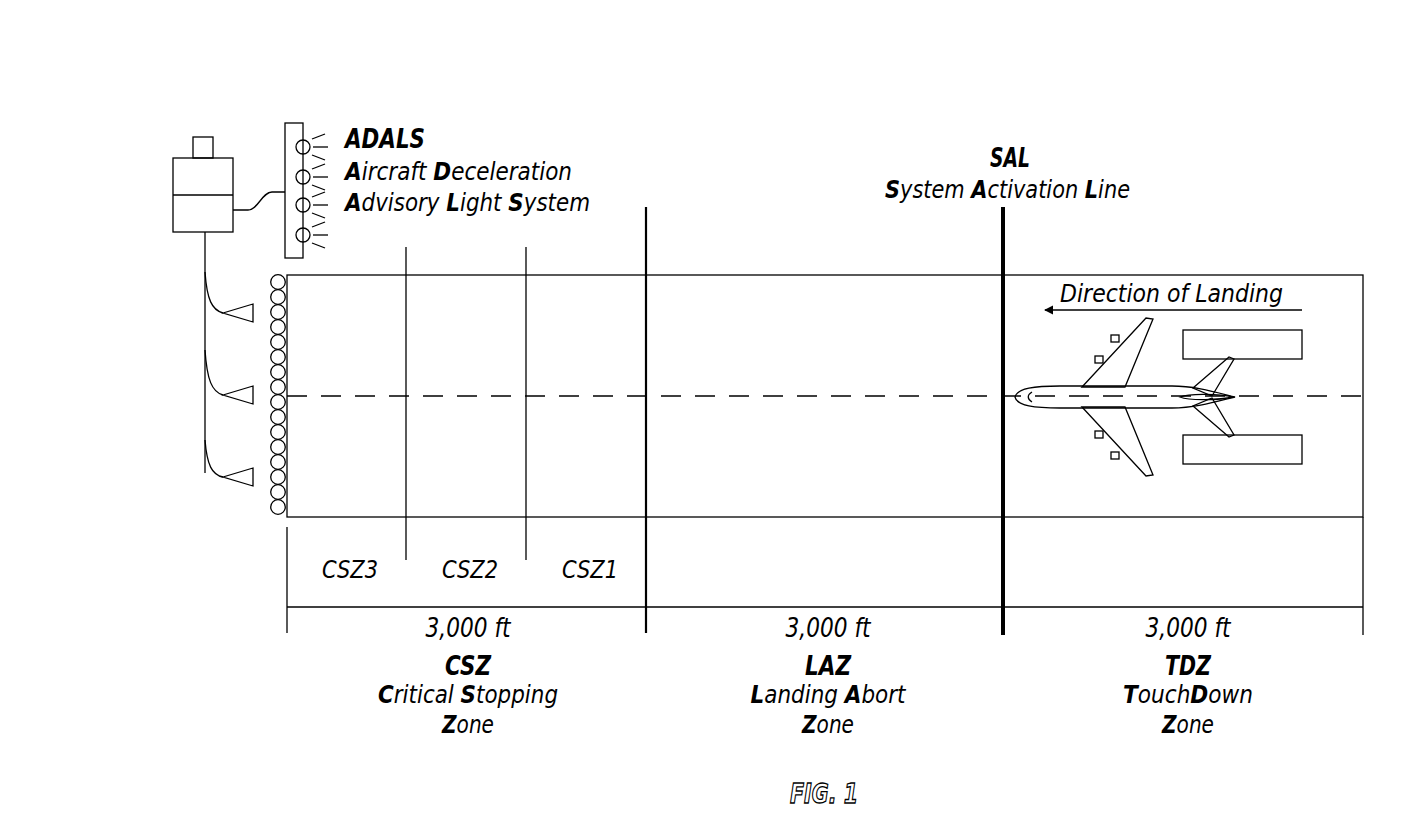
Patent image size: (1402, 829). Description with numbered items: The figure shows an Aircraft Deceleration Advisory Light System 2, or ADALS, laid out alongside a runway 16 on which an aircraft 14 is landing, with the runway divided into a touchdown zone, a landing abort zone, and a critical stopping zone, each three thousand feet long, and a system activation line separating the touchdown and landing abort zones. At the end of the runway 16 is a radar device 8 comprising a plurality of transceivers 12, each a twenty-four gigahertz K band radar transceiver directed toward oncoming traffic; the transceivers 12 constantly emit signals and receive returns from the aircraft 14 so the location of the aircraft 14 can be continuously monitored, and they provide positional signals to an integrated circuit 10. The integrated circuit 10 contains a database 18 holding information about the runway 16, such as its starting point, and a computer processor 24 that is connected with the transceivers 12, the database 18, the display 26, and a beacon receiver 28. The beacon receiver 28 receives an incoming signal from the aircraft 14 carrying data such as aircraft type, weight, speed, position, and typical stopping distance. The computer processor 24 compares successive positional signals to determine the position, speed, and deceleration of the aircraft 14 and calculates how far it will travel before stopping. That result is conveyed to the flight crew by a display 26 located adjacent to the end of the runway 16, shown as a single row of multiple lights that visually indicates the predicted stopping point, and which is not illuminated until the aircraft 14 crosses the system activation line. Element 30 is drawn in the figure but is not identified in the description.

The Aircraft Deceleration Advisory Light System 2 is at (1042, 118).
The radar device 8 is at (262, 442).
The integrated circuit 10 is at (173, 131).
The transceiver 12 is at (245, 322).
The aircraft 14 is at (1074, 385).
The runway 16 is at (688, 275).
The database 18 is at (233, 172).
The computer processor 24 is at (218, 232).
The display 26 is at (309, 120).
The beacon receiver 28 is at (205, 136).
The light 30 is at (311, 246).